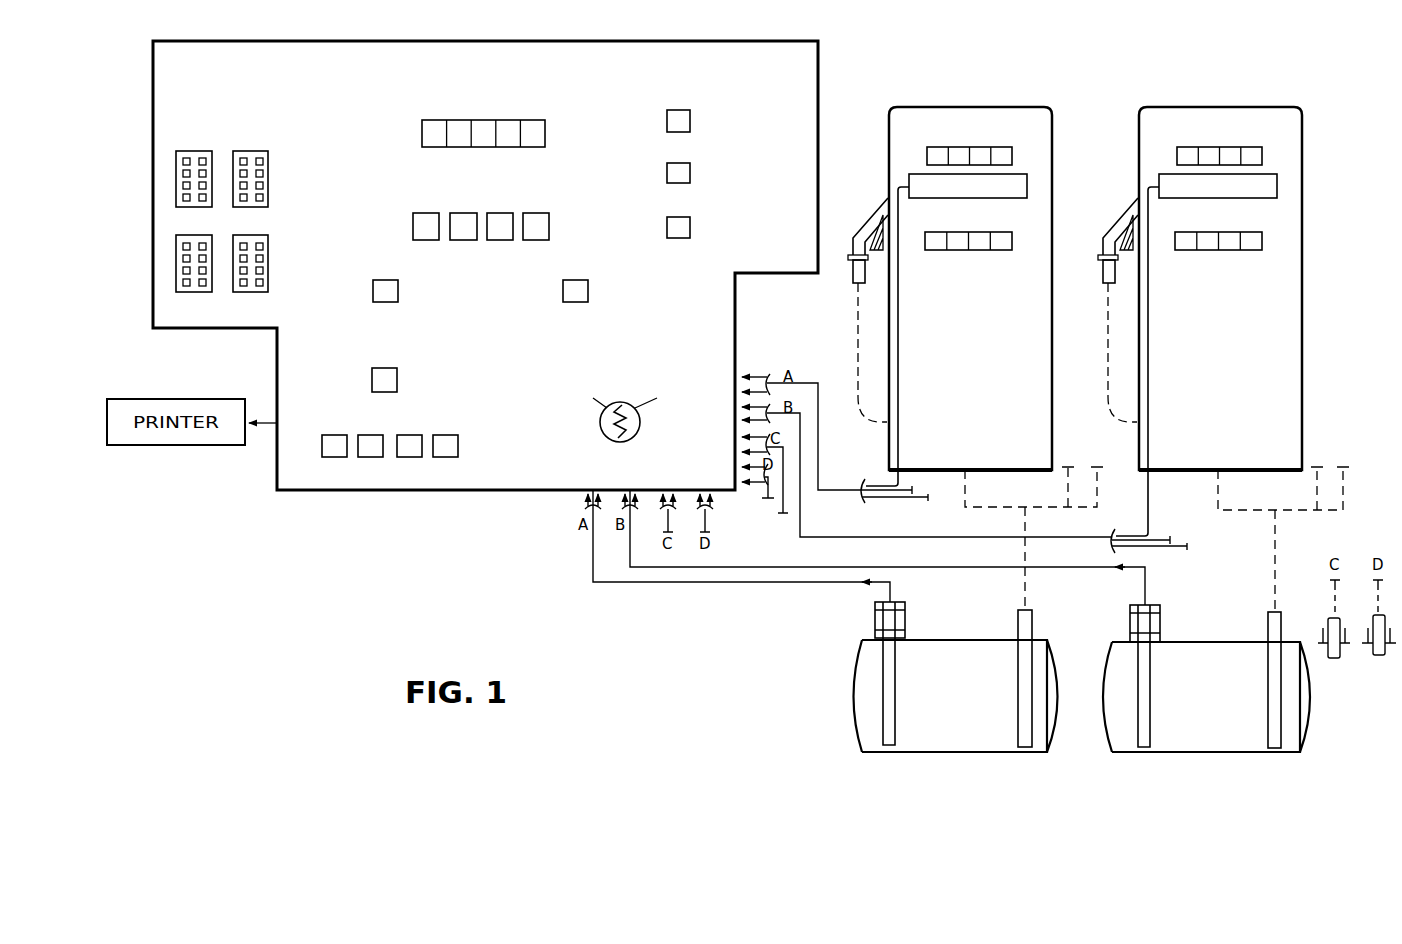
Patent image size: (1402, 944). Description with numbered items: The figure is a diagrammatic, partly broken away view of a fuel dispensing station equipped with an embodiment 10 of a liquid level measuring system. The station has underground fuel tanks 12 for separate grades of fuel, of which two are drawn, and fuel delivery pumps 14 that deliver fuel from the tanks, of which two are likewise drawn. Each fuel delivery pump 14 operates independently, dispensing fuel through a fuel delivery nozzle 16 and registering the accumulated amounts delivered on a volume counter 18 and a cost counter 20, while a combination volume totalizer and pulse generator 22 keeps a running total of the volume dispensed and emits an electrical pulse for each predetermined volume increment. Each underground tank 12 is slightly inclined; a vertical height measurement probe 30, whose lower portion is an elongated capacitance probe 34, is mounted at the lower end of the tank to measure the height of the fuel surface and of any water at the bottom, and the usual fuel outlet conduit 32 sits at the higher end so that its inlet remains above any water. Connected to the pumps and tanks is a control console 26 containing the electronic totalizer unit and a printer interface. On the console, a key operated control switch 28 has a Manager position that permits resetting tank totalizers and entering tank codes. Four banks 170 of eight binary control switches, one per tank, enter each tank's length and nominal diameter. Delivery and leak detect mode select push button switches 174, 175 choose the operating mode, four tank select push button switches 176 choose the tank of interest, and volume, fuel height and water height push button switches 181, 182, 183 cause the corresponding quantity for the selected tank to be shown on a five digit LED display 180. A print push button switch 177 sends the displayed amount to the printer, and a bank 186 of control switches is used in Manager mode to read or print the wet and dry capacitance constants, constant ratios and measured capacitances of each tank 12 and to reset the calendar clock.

The liquid measuring system 10 is at (838, 82).
The underground fuel tank 12 is at (845, 697).
The fuel delivery pump 14 is at (1040, 176).
The fuel delivery nozzle 16 is at (869, 218).
The volume counter 18 is at (1012, 153).
The cost counter 20 is at (1012, 241).
The combination volume totalizer and pulse generator 22 is at (1027, 188).
The control console 26 is at (786, 37).
The key operated control switch 28 is at (637, 437).
The vertical height measurement probe 30 is at (904, 662).
The fuel outlet conduit 32 is at (1030, 730).
The lower elongated capacitance probe 34 is at (891, 730).
The bank of binary control switches 170 is at (175, 157).
The delivery mode select push button switch 174 is at (588, 294).
The leak detect mode select push button switch 175 is at (398, 292).
The tank select push button switch 176 is at (457, 241).
The print push button switch 177 is at (397, 379).
The five digit LED display 180 is at (421, 123).
The volume push button switch 181 is at (667, 116).
The fuel height push button switch 182 is at (667, 170).
The water height push button switch 183 is at (667, 225).
The bank of control switches 186 is at (461, 438).